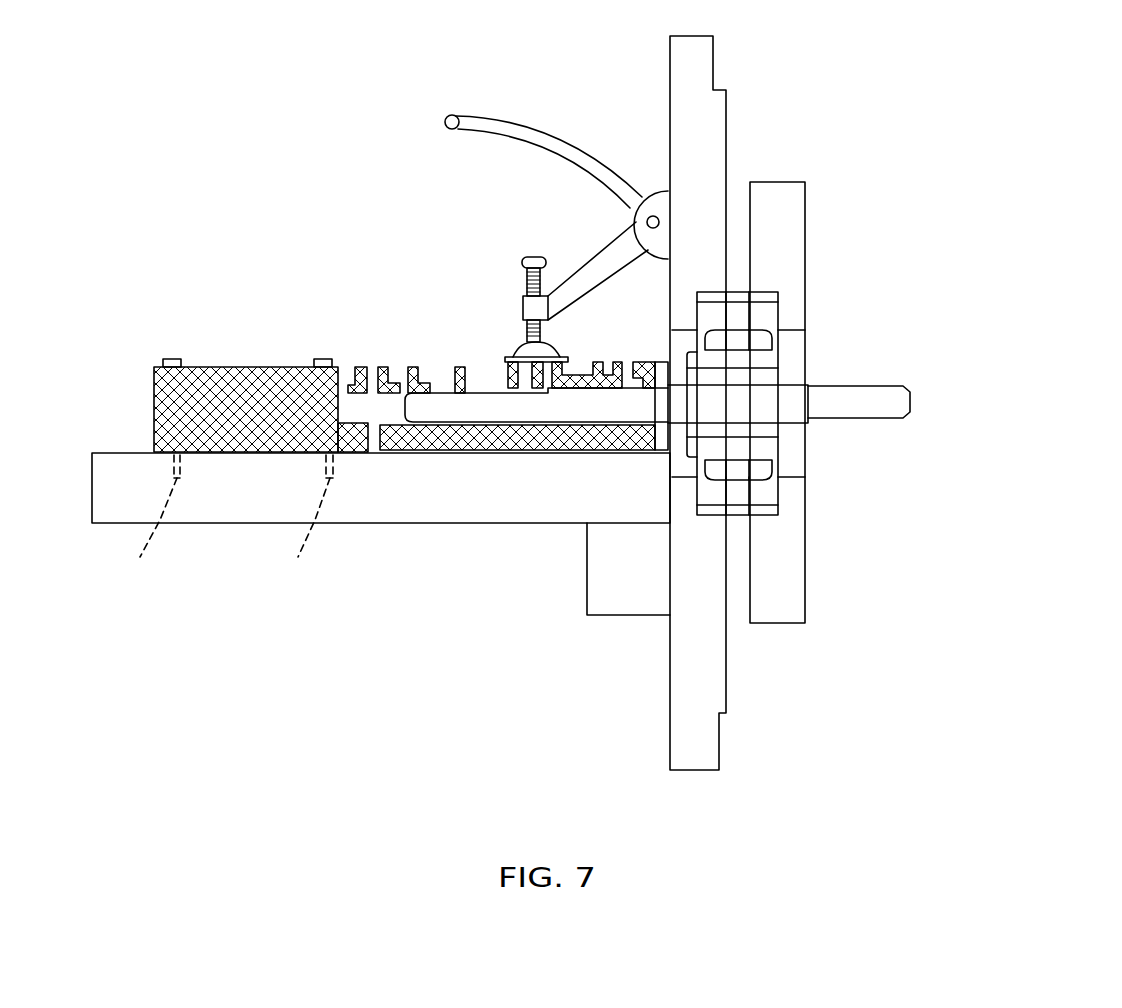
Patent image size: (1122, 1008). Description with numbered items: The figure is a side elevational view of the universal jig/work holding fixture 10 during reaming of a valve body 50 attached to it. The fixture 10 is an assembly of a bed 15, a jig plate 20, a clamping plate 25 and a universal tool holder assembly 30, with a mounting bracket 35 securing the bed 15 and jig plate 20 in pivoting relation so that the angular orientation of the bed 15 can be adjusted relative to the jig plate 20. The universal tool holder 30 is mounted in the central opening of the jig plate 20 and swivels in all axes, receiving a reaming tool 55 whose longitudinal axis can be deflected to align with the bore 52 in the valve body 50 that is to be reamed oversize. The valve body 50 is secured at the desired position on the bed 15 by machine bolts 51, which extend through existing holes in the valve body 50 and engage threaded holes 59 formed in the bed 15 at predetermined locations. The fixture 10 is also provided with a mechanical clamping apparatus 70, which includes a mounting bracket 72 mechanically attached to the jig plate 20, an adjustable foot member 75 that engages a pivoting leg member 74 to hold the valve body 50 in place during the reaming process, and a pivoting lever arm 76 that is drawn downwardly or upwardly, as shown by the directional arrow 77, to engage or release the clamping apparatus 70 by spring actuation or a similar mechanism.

The universal jig/work holding fixture 10 is at (994, 165).
The bed plate 15 is at (225, 523).
The jig plate 20 is at (738, 148).
The clamping plate 25 is at (816, 575).
The universal tool holder assembly 30 is at (795, 440).
The mounting bracket 35 is at (640, 597).
The valve body 50 is at (238, 367).
The machine bolts 51 is at (165, 358).
The bore 52 is at (372, 400).
The reaming tool 55 is at (873, 416).
The threaded holes 59 is at (225, 521).
The mechanical clamping apparatus 70 is at (492, 222).
The mounting bracket 72 is at (657, 192).
The pivoting leg member 74 is at (595, 280).
The adjustable foot member 75 is at (515, 337).
The pivoting lever arm 76 is at (488, 112).
The directional arrow 77 is at (596, 251).